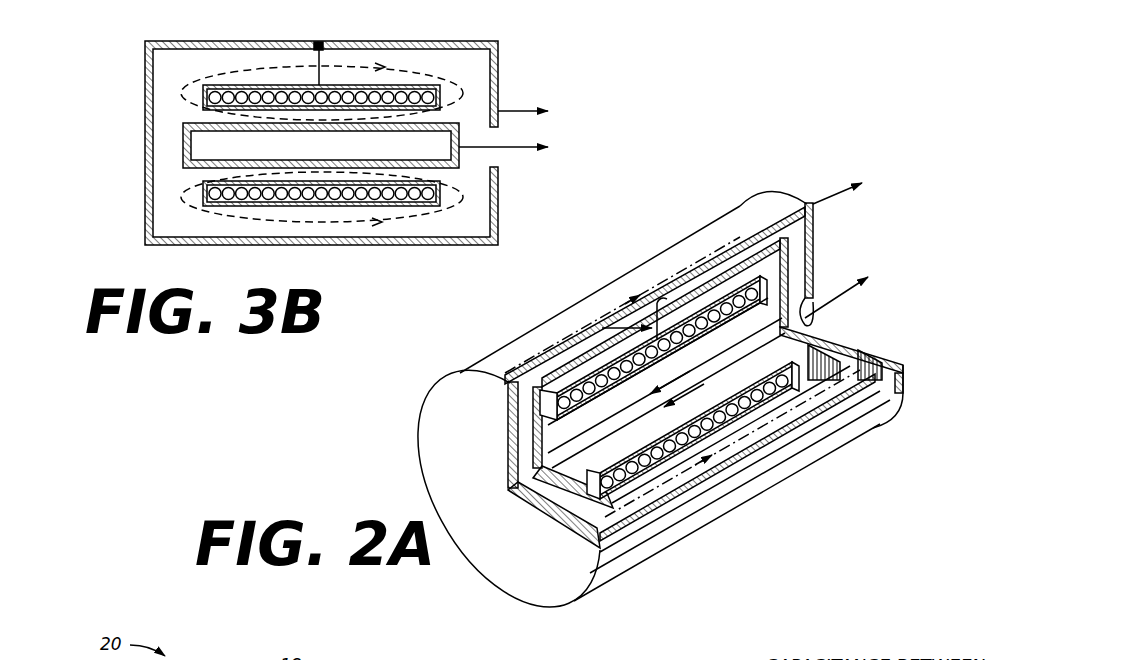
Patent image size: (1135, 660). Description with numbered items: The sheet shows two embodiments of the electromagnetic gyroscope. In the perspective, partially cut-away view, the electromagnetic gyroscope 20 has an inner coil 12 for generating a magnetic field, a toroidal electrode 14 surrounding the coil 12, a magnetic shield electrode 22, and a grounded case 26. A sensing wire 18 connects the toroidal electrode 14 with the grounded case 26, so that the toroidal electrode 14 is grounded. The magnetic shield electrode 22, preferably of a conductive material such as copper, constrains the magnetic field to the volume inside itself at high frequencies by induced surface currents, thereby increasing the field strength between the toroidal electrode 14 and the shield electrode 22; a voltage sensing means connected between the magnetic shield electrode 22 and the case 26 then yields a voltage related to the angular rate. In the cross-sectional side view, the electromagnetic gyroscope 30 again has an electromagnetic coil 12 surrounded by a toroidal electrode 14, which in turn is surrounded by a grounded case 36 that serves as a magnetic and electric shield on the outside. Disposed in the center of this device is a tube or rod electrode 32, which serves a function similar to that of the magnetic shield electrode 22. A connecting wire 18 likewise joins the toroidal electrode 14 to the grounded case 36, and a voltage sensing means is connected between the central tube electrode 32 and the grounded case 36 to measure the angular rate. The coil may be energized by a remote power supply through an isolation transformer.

In FIG. 3B, the electromagnetic gyroscope 30 is at (133, 44).
In FIG. 3B, the grounded case 36 is at (235, 41).
In FIG. 3B, the sensing wire 18 is at (319, 62).
In FIG. 2A, the sensing wire 18 is at (648, 325).
In FIG. 3B, the tube electrode 32 is at (186, 134).
In FIG. 3B, the coil 12 is at (217, 206).
In FIG. 2A, the coil 12 is at (837, 318).
In FIG. 3B, the toroidal electrode 14 is at (307, 207).
In FIG. 2A, the toroidal electrode 14 is at (727, 428).
In FIG. 2A, the electromagnetic gyroscope 20 is at (432, 357).
In FIG. 2A, the grounded case 26 is at (443, 453).
In FIG. 2A, the magnetic shield electrode 22 is at (670, 542).